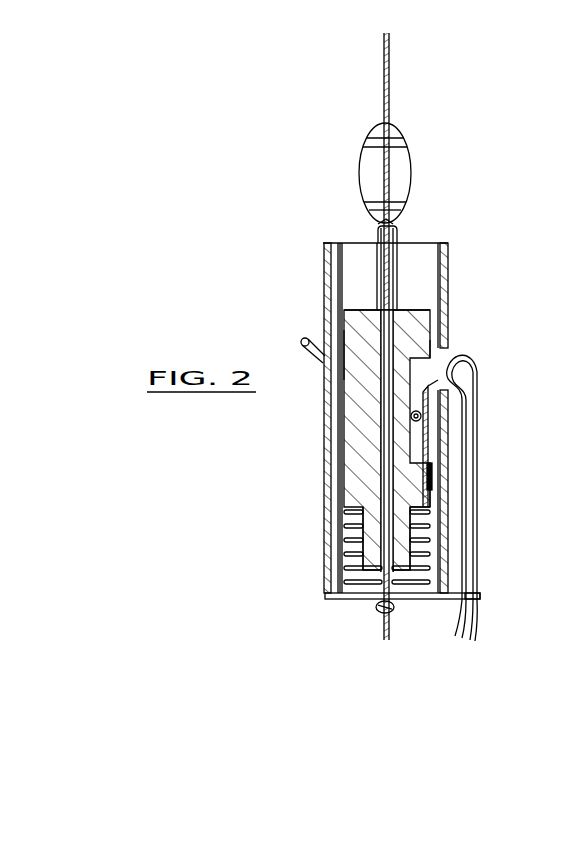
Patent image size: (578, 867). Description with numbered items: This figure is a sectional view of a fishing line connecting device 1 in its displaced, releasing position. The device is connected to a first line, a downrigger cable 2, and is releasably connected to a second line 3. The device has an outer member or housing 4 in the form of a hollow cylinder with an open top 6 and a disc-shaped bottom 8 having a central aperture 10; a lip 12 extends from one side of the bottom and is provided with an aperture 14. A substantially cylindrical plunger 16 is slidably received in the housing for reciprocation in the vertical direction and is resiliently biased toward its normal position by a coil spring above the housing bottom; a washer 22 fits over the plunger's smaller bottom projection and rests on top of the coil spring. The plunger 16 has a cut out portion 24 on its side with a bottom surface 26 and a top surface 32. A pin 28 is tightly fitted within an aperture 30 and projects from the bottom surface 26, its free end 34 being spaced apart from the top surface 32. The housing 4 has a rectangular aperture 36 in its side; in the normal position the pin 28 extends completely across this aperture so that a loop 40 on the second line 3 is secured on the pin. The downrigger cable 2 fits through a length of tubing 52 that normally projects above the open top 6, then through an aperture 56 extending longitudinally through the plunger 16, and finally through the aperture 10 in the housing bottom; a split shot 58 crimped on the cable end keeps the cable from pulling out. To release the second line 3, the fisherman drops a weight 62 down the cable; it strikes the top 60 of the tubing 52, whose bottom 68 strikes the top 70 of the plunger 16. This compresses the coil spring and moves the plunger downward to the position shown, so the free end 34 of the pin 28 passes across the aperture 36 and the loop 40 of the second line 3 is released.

The fishing line connecting device 1 is at (372, 537).
The downrigger cable 2 is at (390, 87).
The second line 3 is at (430, 478).
The housing 4 is at (325, 490).
The open top 6 is at (420, 243).
The bottom 8 is at (347, 558).
The central aperture 10 is at (392, 600).
The lip 12 is at (465, 602).
The aperture 14 is at (472, 596).
The plunger 16 is at (412, 340).
The washer 22 is at (432, 505).
The cut out portion 24 is at (437, 358).
The bottom surface 26 is at (440, 462).
The pin 28 is at (421, 416).
The aperture 30 is at (432, 480).
The top surface 32 is at (355, 398).
The free end 34 is at (442, 387).
The rectangular aperture 36 is at (437, 407).
The loop 40 is at (476, 392).
The length of tubing 52 is at (378, 241).
The aperture 56 is at (345, 330).
The split shot 58 is at (380, 610).
The top 60 is at (398, 232).
The weight 62 is at (400, 172).
The bottom 68 is at (398, 318).
The top 70 is at (360, 308).